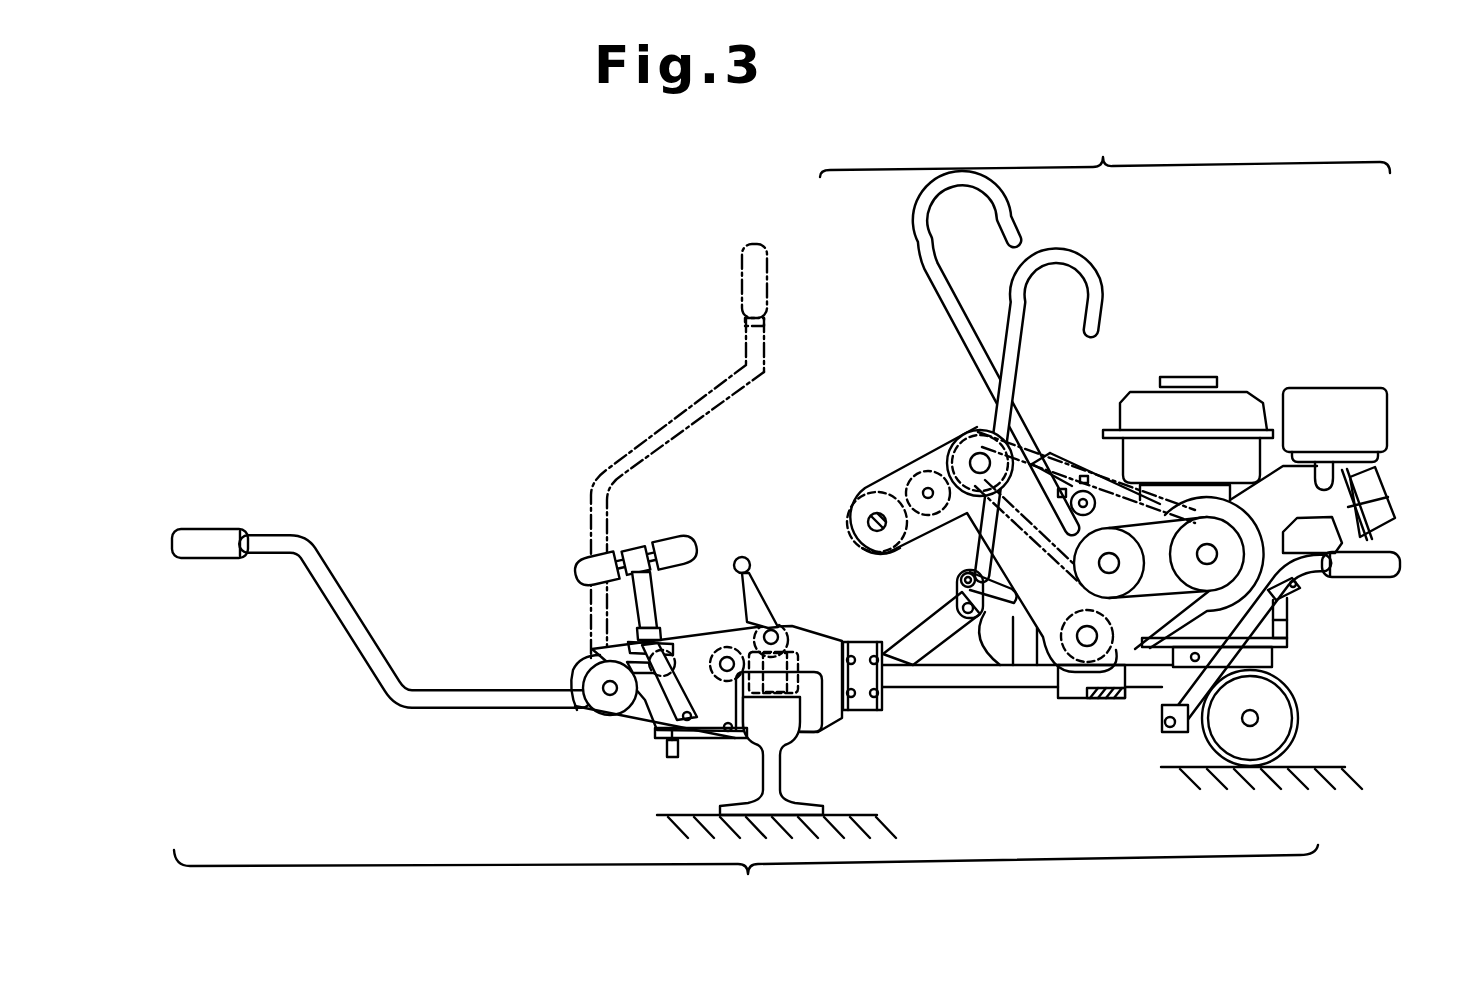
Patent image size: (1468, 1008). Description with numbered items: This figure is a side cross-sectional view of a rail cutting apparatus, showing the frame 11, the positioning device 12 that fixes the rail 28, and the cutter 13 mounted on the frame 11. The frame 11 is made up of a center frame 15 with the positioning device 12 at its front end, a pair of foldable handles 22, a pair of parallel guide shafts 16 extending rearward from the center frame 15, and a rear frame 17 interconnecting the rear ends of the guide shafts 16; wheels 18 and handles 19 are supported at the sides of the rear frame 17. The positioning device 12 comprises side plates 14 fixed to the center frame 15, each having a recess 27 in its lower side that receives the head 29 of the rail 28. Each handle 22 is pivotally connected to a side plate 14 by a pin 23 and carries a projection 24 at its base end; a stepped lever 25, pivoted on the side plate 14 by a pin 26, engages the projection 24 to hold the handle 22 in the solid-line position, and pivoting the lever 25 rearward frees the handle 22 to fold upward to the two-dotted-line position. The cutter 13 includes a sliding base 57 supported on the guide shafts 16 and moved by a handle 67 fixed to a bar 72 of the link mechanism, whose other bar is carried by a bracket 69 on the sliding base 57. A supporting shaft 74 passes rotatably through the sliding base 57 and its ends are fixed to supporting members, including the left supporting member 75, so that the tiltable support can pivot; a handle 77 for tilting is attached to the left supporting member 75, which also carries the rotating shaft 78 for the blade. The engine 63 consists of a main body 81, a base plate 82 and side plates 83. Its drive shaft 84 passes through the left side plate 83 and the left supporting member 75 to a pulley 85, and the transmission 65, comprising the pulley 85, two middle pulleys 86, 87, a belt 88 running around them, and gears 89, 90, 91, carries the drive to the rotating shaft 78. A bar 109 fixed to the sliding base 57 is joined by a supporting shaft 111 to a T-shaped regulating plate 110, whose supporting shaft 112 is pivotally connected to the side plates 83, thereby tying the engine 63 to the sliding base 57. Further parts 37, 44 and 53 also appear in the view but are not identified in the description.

The frame 11 is at (746, 881).
The positioning device 12 is at (877, 762).
The cutter 13 is at (1105, 150).
The side plates 14 is at (721, 658).
The center frame 15 is at (874, 700).
The guide shafts 16 is at (1027, 702).
The rear frame 17 is at (1222, 648).
The wheels 18 is at (1261, 729).
The handles 19 is at (1156, 738).
The foldable handles 22 is at (469, 471).
The pin 23 is at (591, 700).
The projection 24 is at (649, 712).
The lever 25 is at (682, 658).
The pin 26 is at (693, 756).
The recess 27 is at (795, 715).
The rail 28 is at (773, 767).
The head 29 is at (799, 760).
The clamp plate 37 is at (706, 755).
The lock lever 44 is at (637, 586).
The lever 53 is at (774, 600).
The sliding base 57 is at (1032, 676).
The engine 63 is at (1263, 409).
The transmission 65 is at (1096, 435).
The handle 67 is at (1074, 415).
The bracket 69 is at (991, 668).
The bar 72 is at (916, 628).
The supporting shaft 74 is at (1089, 695).
The left supporting member 75 is at (1094, 701).
The handle 77 is at (966, 353).
The rotating shaft 78 is at (850, 556).
The main body 81 is at (1390, 503).
The base plate 82 is at (1251, 622).
The side plates 83 is at (1188, 438).
The drive shaft 84 is at (1135, 540).
The pulley 85 is at (1336, 547).
The middle pulley 86 is at (1140, 576).
The middle pulley 87 is at (977, 437).
The belt 88 is at (1034, 543).
The gear 89 is at (983, 538).
The gear 90 is at (903, 469).
The gear 91 is at (866, 499).
The bar 109 is at (953, 592).
The regulating plate 110 is at (1060, 452).
The supporting shaft 111 is at (940, 582).
The supporting shaft 112 is at (1129, 483).